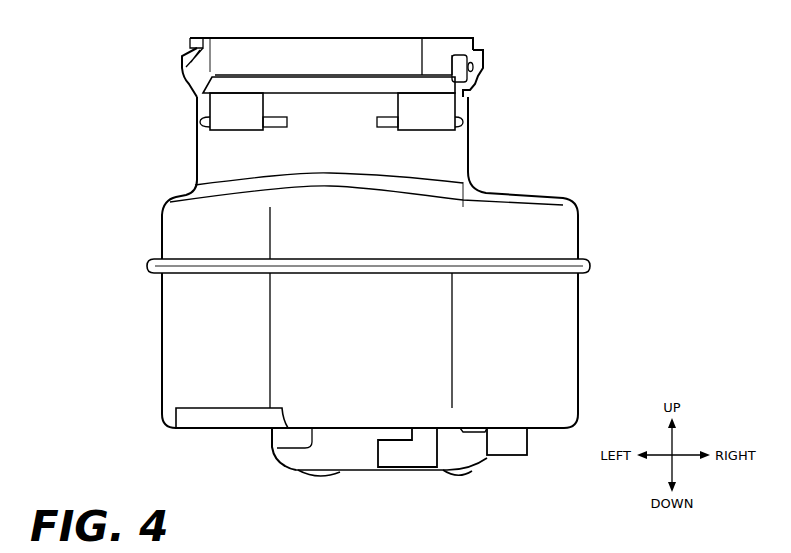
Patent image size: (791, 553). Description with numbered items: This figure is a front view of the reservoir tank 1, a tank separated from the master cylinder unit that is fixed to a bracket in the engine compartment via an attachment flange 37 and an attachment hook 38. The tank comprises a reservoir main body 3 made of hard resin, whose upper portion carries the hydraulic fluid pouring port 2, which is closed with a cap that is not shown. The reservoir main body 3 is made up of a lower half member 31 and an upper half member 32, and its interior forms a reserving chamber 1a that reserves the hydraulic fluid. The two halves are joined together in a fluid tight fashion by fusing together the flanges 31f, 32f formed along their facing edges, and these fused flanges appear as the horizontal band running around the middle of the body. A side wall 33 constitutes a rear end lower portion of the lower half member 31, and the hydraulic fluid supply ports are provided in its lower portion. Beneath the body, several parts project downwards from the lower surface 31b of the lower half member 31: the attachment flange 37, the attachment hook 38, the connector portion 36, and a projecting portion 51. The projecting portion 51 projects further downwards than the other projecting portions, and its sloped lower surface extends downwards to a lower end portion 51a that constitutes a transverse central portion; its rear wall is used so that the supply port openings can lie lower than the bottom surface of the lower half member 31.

The reservoir tank 1 is at (156, 126).
The reserving chamber 1a is at (545, 368).
The hydraulic fluid pouring port 2 is at (468, 143).
The reservoir main body 3 is at (655, 190).
The lower half member 31 is at (573, 316).
The lower surface 31b is at (275, 446).
The flange 31f is at (153, 277).
The upper half member 32 is at (573, 233).
The flange 32f is at (152, 258).
The side wall 33 is at (183, 317).
The connector portion 36 is at (513, 452).
The attachment flange 37 is at (208, 431).
The attachment hook 38 is at (423, 442).
The projecting portion 51 is at (362, 482).
The lower end portion 51a is at (388, 478).